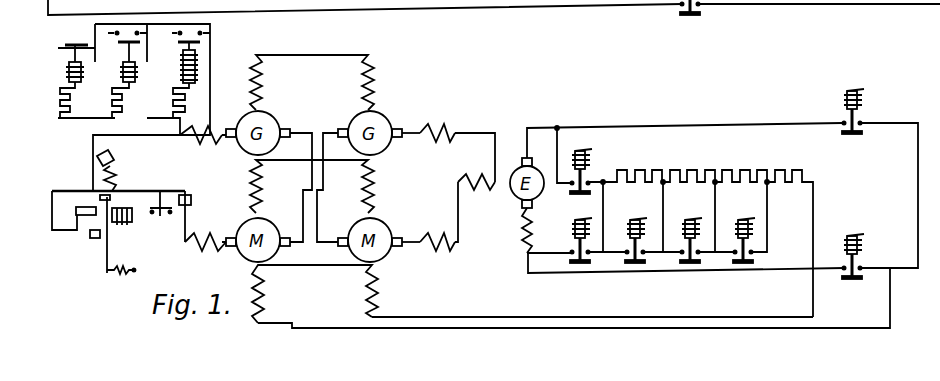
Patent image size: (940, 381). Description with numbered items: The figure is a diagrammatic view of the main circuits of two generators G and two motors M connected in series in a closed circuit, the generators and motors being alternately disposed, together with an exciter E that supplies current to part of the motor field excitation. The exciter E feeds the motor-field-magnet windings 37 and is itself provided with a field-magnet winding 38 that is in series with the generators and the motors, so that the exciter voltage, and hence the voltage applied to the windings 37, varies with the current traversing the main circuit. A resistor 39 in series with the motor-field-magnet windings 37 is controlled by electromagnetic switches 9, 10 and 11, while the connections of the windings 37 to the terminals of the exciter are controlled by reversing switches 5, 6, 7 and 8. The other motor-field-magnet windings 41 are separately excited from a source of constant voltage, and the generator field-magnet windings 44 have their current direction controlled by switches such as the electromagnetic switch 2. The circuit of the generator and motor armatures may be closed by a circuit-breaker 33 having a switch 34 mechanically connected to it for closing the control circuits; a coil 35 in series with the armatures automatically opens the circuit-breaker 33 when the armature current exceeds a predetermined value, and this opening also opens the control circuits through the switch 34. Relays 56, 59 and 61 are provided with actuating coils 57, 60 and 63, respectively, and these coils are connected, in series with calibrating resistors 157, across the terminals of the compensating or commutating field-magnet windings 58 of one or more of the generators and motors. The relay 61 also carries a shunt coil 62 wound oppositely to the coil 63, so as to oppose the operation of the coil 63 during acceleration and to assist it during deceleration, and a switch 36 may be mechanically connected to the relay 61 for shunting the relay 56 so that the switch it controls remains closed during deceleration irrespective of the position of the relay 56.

The electromagnetic switch 2 is at (700, 14).
The reversing switch 5 is at (860, 118).
The reversing switch 6 is at (860, 264).
The reversing switch 7 is at (572, 264).
The reversing switch 8 is at (588, 182).
The electromagnetic switch 9 is at (627, 264).
The electromagnetic switch 10 is at (686, 264).
The electromagnetic switch 11 is at (740, 264).
The circuit-breaker 33 is at (80, 272).
The switch 34 is at (160, 216).
The coil 35 is at (82, 207).
The switch 36 is at (188, 100).
The motor-field-magnet windings 37 is at (365, 290).
The field-magnet winding 38 is at (474, 192).
The resistor 39 is at (695, 170).
The motor-field-magnet windings 41 is at (262, 190).
The generator field-magnet windings 44 is at (362, 72).
The relay 56 is at (75, 44).
The actuating coil 57 is at (70, 70).
The compensating or commutating field-magnet windings 58 is at (205, 143).
The relay 59 is at (138, 35).
The actuating coil 60 is at (137, 80).
The relay 61 is at (200, 40).
The shunt coil 62 is at (210, 52).
The actuating coil 63 is at (198, 72).
The calibrating resistors 157 is at (180, 97).